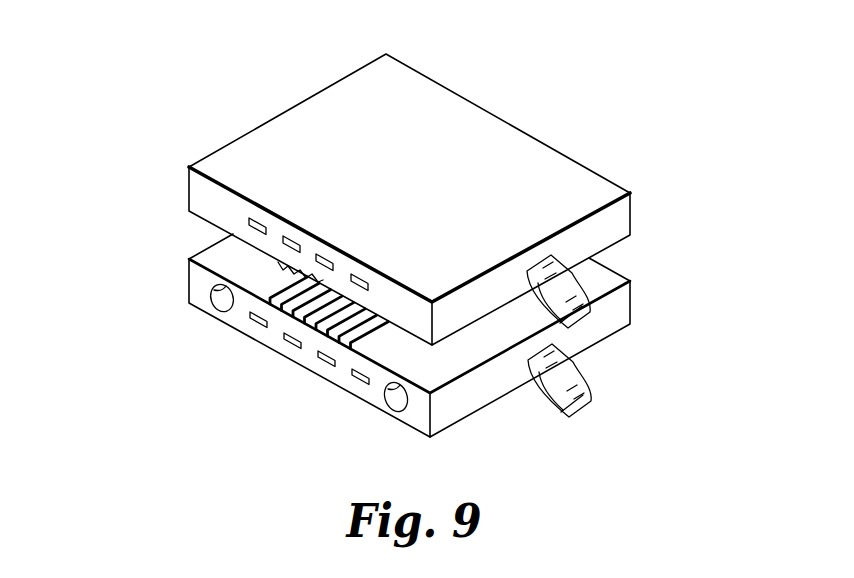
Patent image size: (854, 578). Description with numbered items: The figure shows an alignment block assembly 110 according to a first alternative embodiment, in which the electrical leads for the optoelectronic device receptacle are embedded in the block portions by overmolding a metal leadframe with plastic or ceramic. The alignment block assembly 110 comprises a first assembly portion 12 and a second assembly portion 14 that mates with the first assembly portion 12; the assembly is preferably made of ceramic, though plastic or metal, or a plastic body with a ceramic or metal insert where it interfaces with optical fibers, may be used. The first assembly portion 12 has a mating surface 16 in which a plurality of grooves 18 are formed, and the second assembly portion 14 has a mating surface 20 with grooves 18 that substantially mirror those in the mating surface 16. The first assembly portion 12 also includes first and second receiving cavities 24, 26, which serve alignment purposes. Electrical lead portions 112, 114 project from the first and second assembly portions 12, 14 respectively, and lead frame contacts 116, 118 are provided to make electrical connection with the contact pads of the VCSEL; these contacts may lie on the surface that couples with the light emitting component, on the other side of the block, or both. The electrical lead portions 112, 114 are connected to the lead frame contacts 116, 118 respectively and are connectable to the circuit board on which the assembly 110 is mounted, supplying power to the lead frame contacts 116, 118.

The alignment block assembly 110 is at (586, 68).
The second assembly portion 14 is at (292, 112).
The first assembly portion 12 is at (186, 271).
The mating surface 20 is at (190, 218).
The mating surface 16 is at (437, 368).
The grooves 18 is at (277, 267).
The lead frame contact 116 is at (284, 237).
The lead frame contact 118 is at (286, 338).
The first receiving cavity 24 is at (215, 308).
The second receiving cavity 26 is at (392, 405).
The electrical lead portion 114 is at (578, 312).
The electrical lead portion 112 is at (582, 398).